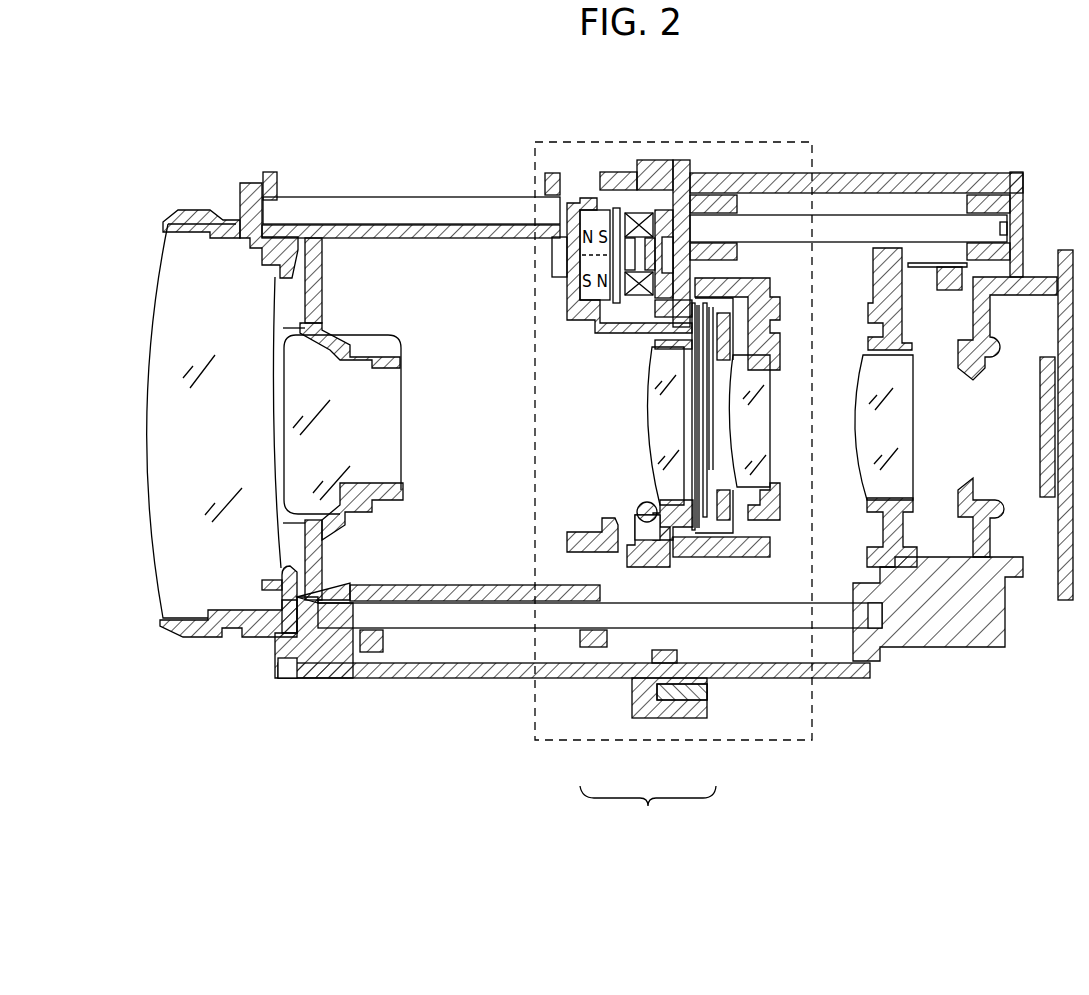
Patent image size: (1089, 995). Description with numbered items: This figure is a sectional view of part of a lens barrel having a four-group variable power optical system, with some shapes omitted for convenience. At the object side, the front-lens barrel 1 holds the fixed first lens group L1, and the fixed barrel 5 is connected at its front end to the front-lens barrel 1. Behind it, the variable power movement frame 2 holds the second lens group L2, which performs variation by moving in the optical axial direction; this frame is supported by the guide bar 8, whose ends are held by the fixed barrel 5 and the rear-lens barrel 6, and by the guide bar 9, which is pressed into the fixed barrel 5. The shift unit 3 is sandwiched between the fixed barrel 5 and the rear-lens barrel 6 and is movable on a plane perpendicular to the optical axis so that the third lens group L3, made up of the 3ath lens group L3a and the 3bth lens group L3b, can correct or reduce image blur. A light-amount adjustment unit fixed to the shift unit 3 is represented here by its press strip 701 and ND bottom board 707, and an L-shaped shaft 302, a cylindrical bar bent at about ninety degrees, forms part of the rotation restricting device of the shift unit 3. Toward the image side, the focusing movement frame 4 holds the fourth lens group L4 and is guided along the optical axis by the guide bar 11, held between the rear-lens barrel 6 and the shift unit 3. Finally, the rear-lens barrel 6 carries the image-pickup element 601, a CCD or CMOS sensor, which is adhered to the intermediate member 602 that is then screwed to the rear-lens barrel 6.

The front-lens barrel 1 is at (200, 218).
The first lens group L1 is at (192, 243).
The variable power movement frame 2 is at (375, 335).
The second lens group L2 is at (318, 368).
The guide bar 9 is at (430, 206).
The fixed barrel 5 is at (480, 226).
The guide bar 8 is at (445, 620).
The shift unit 3 is at (600, 143).
The ND bottom board 707 is at (752, 300).
The focusing movement frame 4 is at (870, 300).
The guide bar 11 is at (930, 228).
The rear-lens barrel 6 is at (968, 187).
The 3ath lens group L3a is at (675, 472).
The 3bth lens group L3b is at (748, 482).
The third lens group L3 is at (648, 809).
The press strip 701 is at (700, 530).
The L-shaped shaft 302 is at (640, 520).
The fourth lens group L4 is at (860, 452).
The image-pickup element 601 is at (1045, 500).
The intermediate member 602 is at (1065, 602).